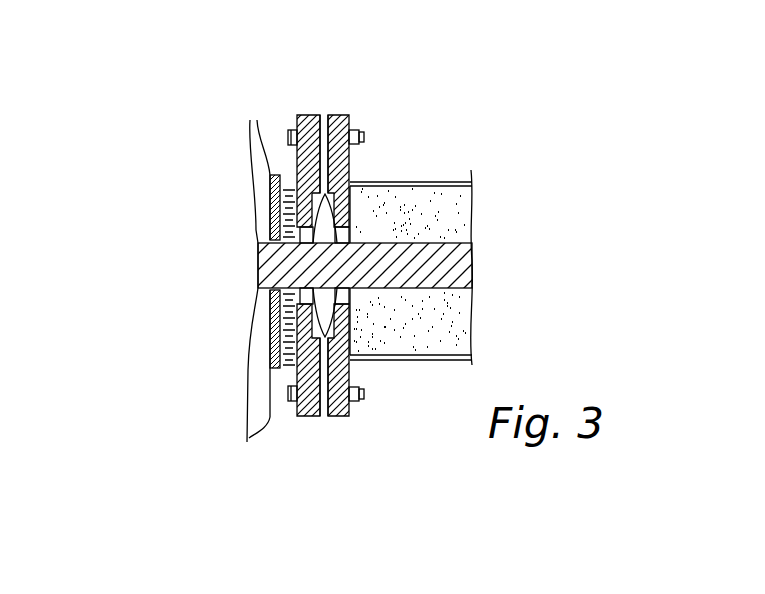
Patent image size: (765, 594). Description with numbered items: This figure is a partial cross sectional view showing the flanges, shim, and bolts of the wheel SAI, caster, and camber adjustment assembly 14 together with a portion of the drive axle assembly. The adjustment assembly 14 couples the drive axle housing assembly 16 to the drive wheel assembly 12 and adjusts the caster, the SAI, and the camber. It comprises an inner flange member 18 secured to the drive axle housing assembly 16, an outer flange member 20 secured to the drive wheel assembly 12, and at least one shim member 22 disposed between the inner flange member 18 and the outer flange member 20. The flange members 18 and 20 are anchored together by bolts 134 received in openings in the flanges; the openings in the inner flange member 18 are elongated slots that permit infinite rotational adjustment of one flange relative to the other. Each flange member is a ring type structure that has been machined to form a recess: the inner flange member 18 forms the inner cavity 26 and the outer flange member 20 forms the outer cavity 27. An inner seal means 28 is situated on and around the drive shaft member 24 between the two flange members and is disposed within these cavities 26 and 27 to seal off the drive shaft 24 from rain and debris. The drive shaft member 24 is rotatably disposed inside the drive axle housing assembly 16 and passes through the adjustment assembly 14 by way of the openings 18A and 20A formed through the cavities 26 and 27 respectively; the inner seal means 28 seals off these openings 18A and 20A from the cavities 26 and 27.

The drive wheel assembly 12 is at (236, 387).
The wheel SAI, caster, and camber adjustment assembly 14 is at (303, 84).
The drive axle housing assembly 16 is at (450, 219).
The inner flange member 18 is at (338, 116).
The opening 18A is at (423, 186).
The outer flange member 20 is at (307, 116).
The opening 20A is at (300, 233).
The shim member 22 is at (324, 130).
The drive shaft member 24 is at (462, 258).
The inner cavity 26 is at (343, 236).
The outer cavity 27 is at (297, 198).
The inner seal means 28 is at (327, 303).
The bolts 134 is at (358, 131).